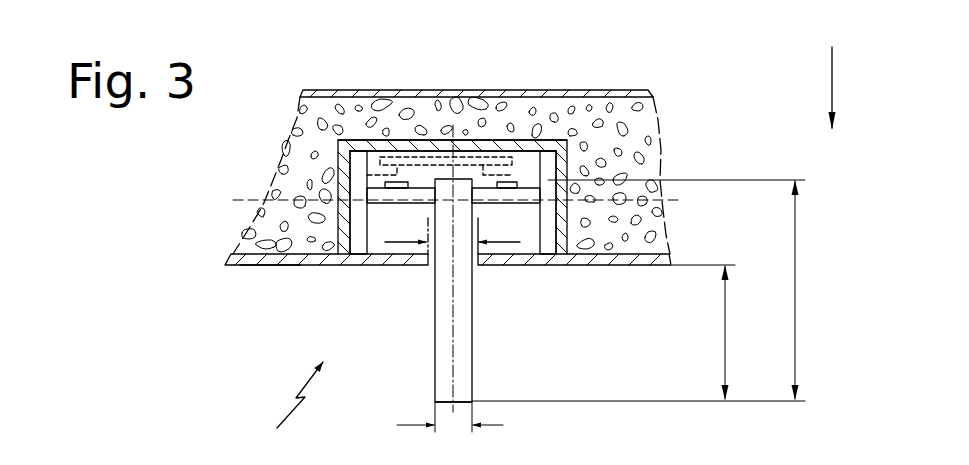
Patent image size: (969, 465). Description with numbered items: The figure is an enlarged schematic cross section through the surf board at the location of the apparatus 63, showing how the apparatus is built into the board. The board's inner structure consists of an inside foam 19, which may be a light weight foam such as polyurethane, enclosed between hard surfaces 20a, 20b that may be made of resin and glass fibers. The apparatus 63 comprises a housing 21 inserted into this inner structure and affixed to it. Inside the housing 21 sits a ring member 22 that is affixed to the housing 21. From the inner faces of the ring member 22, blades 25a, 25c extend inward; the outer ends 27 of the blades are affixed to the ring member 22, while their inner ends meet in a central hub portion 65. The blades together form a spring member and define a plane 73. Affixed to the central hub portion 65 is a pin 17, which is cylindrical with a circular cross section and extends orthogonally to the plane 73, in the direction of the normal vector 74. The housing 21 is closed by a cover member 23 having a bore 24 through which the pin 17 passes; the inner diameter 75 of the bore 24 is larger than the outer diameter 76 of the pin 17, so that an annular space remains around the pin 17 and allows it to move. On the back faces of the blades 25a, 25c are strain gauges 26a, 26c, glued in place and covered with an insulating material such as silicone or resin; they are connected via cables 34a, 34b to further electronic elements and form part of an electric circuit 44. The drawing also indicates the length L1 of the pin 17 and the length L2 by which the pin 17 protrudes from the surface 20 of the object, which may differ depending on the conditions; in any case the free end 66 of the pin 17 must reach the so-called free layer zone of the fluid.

The pin 17 is at (470, 376).
The inside foam 19 is at (643, 128).
The surface 20 is at (292, 267).
The hard surface 20a is at (322, 90).
The hard surface 20b is at (242, 262).
The housing 21 is at (567, 166).
The ring member 22 is at (566, 255).
The cover member 23 is at (528, 250).
The bore 24 is at (428, 275).
The blade 25a is at (360, 215).
The blade 25c is at (548, 230).
The strain gauge 26a is at (398, 244).
The strain gauge 26c is at (522, 244).
The outer end of blade 27 is at (518, 183).
The cable 34a is at (358, 140).
The cable 34b is at (473, 140).
The electric circuit 44 is at (403, 140).
The apparatus 63 is at (280, 402).
The central hub portion 65 is at (487, 172).
The free end of pin 66 is at (447, 376).
The plane 73 is at (677, 201).
The normal vector 74 is at (832, 62).
The inner diameter of bore 75 is at (450, 157).
The outer diameter of pin 76 is at (503, 426).
The length of pin L1 is at (725, 337).
The protruding length of pin L2 is at (795, 312).